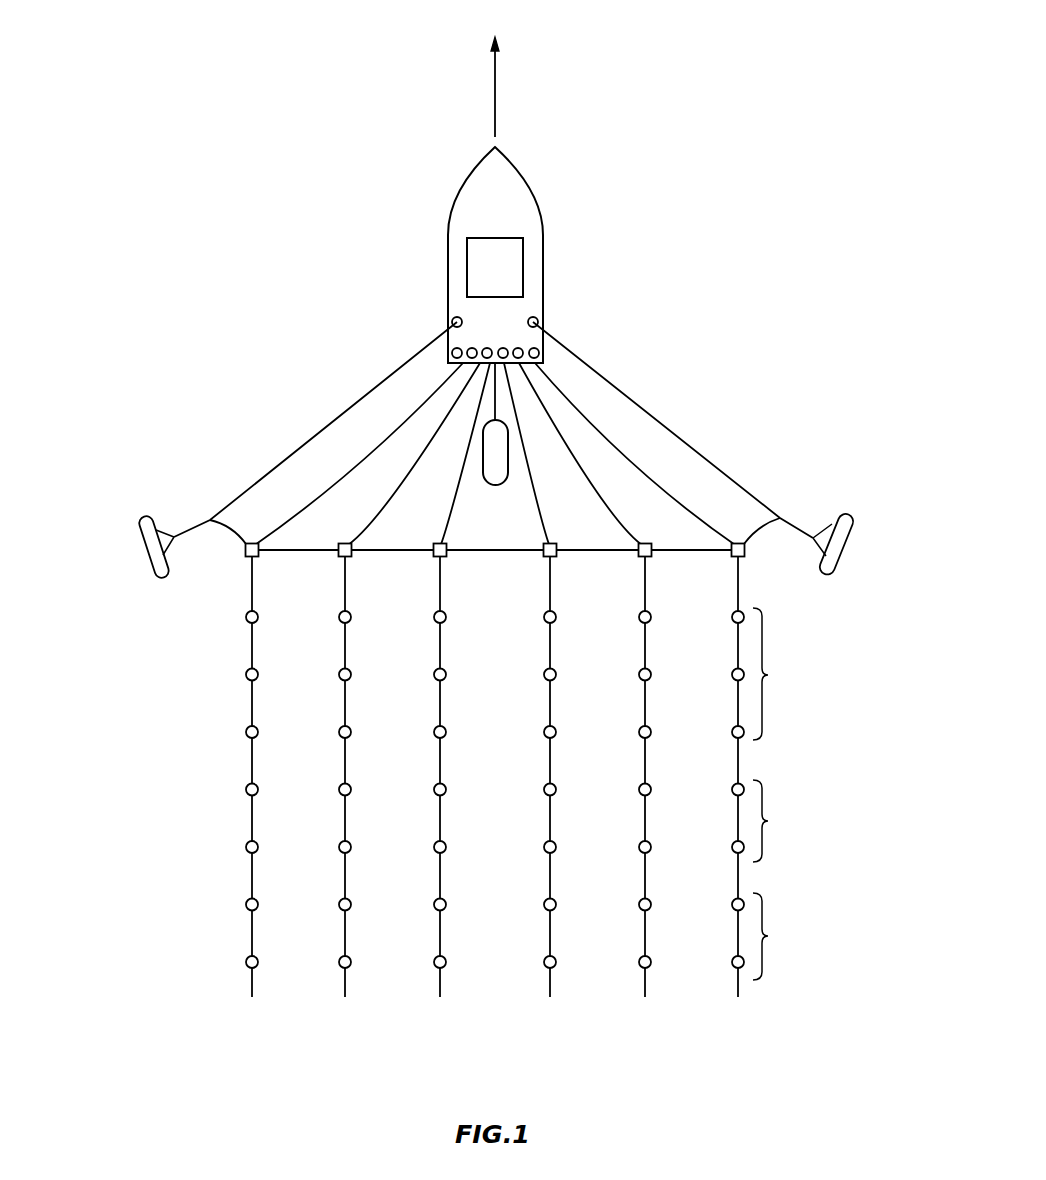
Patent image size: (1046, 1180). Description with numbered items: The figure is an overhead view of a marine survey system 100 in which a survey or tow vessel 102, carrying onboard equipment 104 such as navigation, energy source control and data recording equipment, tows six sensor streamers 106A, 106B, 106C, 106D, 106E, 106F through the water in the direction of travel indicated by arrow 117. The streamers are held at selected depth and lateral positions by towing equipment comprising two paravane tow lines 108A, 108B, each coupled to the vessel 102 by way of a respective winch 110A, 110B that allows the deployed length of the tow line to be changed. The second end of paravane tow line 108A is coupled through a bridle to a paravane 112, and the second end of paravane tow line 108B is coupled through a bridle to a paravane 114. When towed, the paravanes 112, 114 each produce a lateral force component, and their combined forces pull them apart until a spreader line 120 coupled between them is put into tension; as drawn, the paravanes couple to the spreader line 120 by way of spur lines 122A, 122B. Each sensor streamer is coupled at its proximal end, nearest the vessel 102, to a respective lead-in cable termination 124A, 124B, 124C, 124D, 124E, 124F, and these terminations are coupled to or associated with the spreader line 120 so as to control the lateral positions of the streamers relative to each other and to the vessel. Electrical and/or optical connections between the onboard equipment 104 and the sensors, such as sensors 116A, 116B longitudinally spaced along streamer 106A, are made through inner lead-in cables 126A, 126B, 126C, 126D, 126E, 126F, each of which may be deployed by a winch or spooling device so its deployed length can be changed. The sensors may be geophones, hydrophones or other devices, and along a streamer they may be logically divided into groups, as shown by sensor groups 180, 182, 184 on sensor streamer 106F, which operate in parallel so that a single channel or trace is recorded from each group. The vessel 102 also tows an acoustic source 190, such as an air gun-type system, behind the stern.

The marine survey system 100 is at (264, 78).
The tow vessel 102 is at (455, 203).
The onboard equipment 104 is at (525, 258).
The sensor streamer 106A is at (192, 805).
The sensor streamer 106B is at (345, 991).
The sensor streamer 106C is at (440, 991).
The sensor streamer 106D is at (550, 991).
The sensor streamer 106E is at (645, 990).
The sensor streamer 106F is at (738, 986).
The paravane tow line 108A is at (428, 347).
The paravane tow line 108B is at (653, 426).
The winch 110A is at (450, 318).
The winch 110B is at (543, 314).
The paravane 112 is at (155, 582).
The paravane 114 is at (848, 512).
The sensor 116A is at (246, 622).
The sensor 116B is at (245, 678).
The arrow 117 is at (498, 87).
The spreader line 120 is at (467, 548).
The spur line 122A is at (235, 541).
The spur line 122B is at (763, 540).
The lead-in cable termination 124A is at (257, 557).
The lead-in cable termination 124B is at (350, 557).
The lead-in cable termination 124C is at (446, 557).
The lead-in cable termination 124D is at (556, 557).
The lead-in cable termination 124E is at (650, 557).
The lead-in cable termination 124F is at (748, 553).
The lead-in cable 126A is at (415, 402).
The lead-in cable 126B is at (430, 440).
The lead-in cable 126C is at (457, 480).
The lead-in cable 126D is at (530, 405).
The lead-in cable 126E is at (553, 425).
The lead-in cable 126F is at (645, 472).
The sensor group 180 is at (768, 936).
The sensor group 182 is at (768, 821).
The sensor group 184 is at (768, 675).
The acoustic source 190 is at (509, 463).